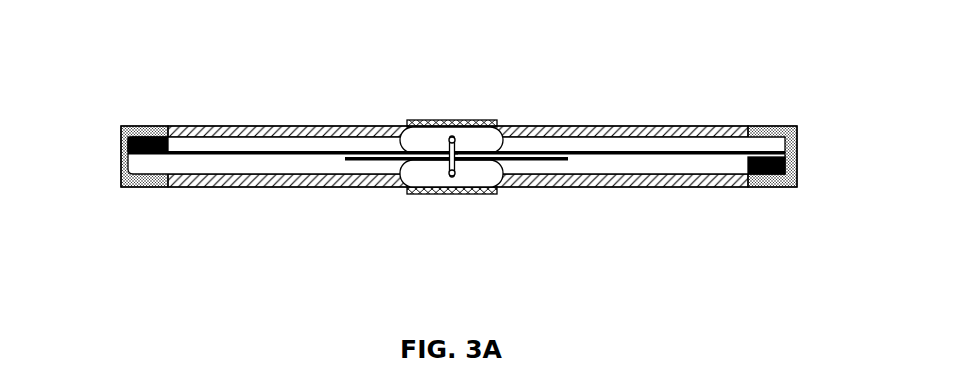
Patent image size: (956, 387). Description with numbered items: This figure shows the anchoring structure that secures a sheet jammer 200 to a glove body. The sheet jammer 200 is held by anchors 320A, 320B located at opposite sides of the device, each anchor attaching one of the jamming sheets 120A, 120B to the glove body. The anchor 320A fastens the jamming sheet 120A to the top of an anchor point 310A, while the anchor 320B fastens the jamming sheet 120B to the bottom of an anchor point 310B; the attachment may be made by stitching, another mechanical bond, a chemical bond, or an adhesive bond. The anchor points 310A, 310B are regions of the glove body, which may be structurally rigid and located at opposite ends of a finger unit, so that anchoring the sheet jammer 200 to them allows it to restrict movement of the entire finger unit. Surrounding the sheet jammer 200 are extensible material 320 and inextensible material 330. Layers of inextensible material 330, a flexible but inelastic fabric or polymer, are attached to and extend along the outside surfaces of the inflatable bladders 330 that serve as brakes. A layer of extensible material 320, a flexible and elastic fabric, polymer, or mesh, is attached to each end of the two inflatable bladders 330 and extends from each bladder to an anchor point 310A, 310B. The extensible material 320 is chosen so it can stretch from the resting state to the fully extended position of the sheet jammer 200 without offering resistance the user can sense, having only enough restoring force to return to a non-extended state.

The sheet jammer 200 is at (429, 166).
The anchor point 310A is at (137, 194).
The anchor point 310B is at (761, 188).
The extensible material 320 is at (223, 190).
The anchor 320A is at (151, 137).
The anchor 320B is at (767, 155).
The inextensible material 330 is at (487, 217).
The jamming sheet 120A is at (252, 147).
The jamming sheet 120B is at (565, 107).